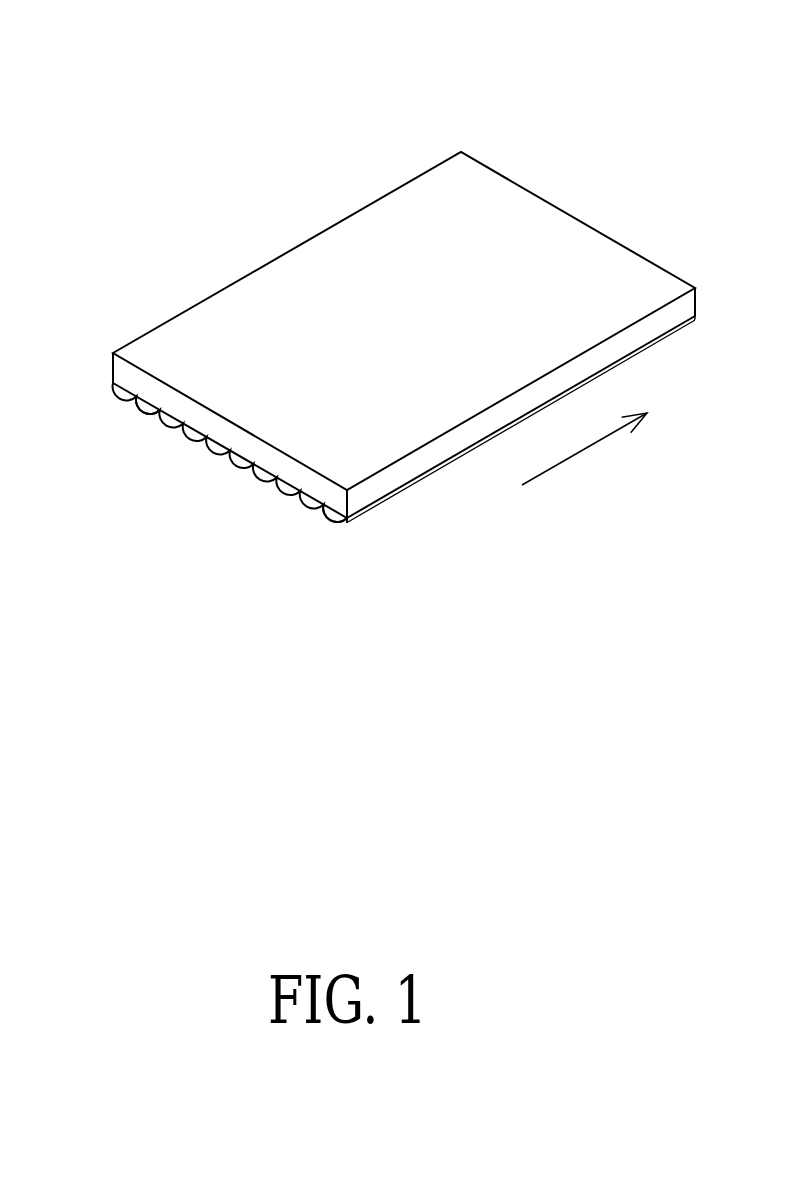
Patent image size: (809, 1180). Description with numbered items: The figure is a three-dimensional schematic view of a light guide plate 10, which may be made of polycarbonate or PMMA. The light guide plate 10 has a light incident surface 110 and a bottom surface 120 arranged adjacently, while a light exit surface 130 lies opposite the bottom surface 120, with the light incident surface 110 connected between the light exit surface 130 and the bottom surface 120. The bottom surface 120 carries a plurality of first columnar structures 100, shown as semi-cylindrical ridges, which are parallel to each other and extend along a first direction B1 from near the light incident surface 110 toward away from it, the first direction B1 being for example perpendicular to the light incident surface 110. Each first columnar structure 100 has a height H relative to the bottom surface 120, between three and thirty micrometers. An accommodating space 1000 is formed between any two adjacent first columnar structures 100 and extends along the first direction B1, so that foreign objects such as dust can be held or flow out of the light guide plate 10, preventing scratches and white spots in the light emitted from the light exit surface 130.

The light guide plate 10 is at (65, 56).
The light exit surface 130 is at (391, 222).
The bottom surface 120 is at (118, 387).
The first columnar structure 100 is at (128, 398).
The accommodating space 1000 is at (133, 404).
The light incident surface 110 is at (257, 447).
The height H is at (335, 507).
The first direction B1 is at (584, 451).